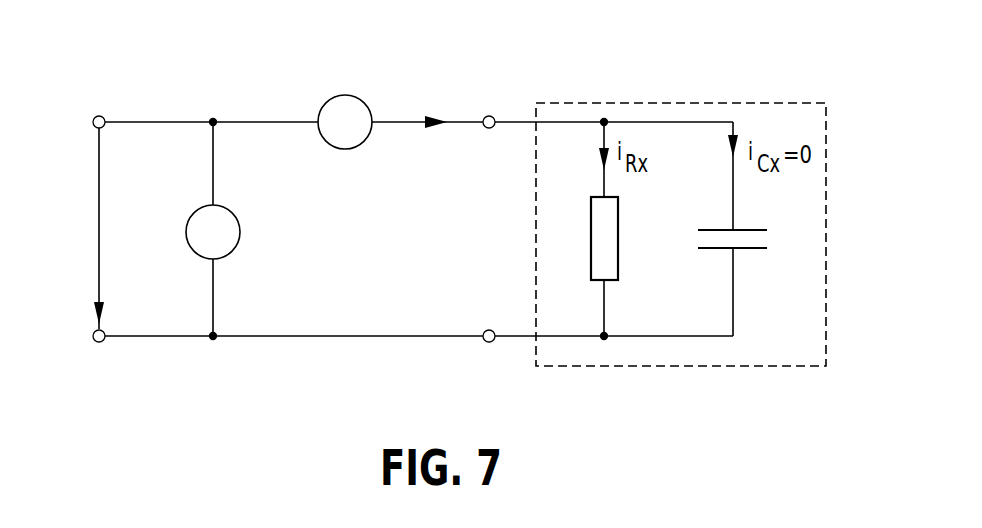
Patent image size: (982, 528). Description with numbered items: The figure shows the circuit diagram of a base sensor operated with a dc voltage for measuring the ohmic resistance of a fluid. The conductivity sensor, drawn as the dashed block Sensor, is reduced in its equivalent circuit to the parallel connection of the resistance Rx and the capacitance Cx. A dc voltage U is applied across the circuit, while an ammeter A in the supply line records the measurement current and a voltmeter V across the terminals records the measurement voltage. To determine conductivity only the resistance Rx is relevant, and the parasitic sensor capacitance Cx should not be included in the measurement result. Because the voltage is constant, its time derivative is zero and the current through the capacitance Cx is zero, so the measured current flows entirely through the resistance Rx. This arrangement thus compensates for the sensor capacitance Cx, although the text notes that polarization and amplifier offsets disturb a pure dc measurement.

The resistance Rx is at (624, 229).
The sensor capacitance Cx is at (750, 229).
The ammeter (current measurement) A is at (420, 113).
The voltmeter (voltage measurement) V is at (294, 229).
The applied voltage U is at (83, 228).
The base sensor Sensor is at (681, 250).